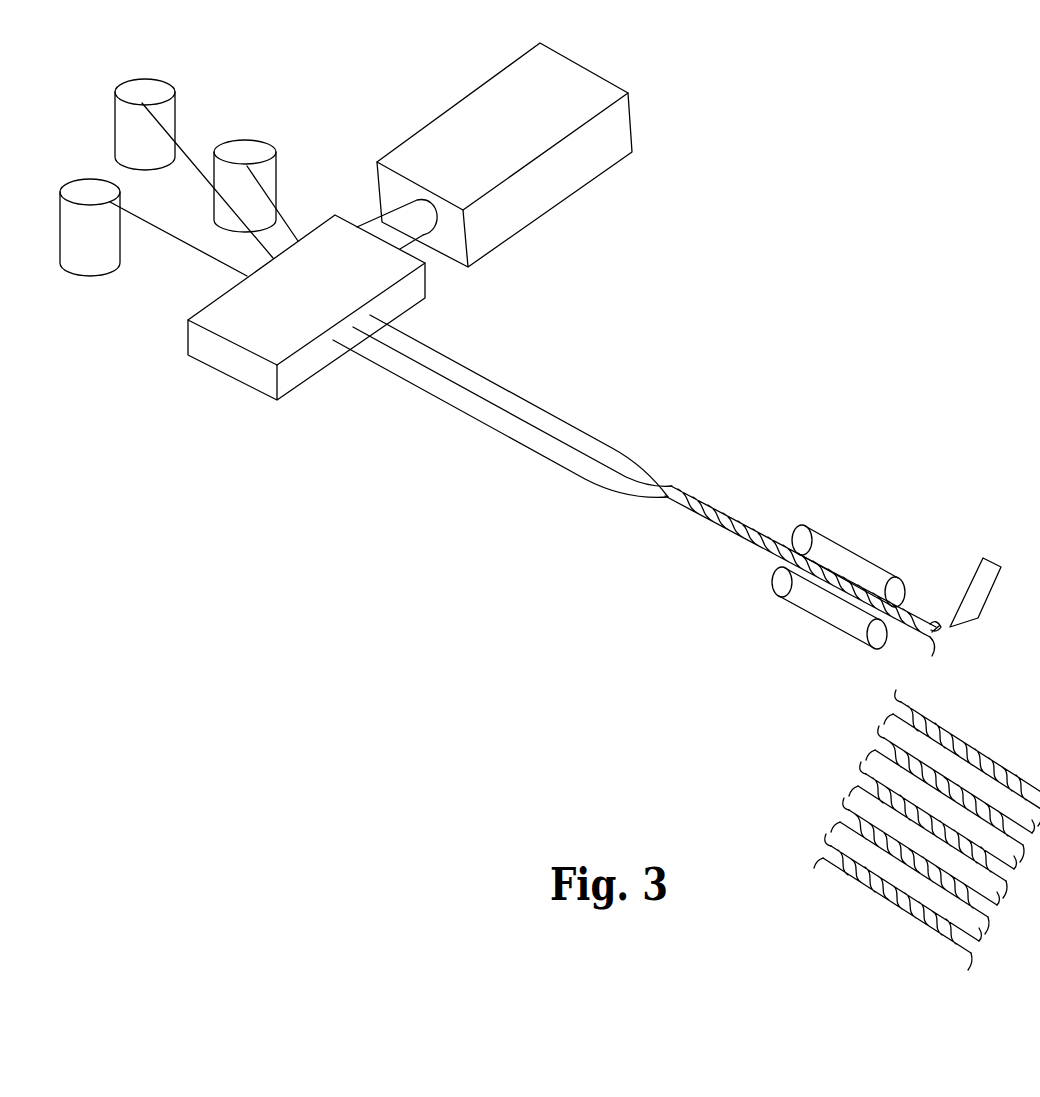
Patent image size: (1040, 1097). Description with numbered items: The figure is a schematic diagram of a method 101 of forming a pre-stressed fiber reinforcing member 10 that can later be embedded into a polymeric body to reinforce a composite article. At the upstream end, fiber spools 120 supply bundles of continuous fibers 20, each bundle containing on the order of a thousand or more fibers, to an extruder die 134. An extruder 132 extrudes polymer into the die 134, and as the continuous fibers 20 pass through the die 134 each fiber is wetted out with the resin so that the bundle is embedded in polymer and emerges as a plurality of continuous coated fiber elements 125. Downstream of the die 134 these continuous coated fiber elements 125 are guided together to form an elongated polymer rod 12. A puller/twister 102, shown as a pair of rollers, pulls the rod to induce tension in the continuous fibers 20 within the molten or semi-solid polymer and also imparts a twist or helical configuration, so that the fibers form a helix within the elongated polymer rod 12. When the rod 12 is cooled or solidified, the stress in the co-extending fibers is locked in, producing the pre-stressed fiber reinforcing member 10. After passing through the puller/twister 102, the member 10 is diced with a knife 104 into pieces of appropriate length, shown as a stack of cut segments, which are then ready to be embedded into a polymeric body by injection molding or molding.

The pre-stressed fiber reinforcing member 10 is at (1000, 762).
The elongated polymer rod 12 is at (750, 523).
The continuous fibers 20 is at (173, 232).
The method of forming a pre-stressed fiber reinforcing member 101 is at (815, 140).
The puller/twister 102 is at (804, 606).
The knife 104 is at (995, 566).
The fiber spools 120 is at (245, 150).
The continuous coated fiber elements 125 is at (590, 433).
The extruder 132 is at (518, 140).
The extruder die 134 is at (314, 301).